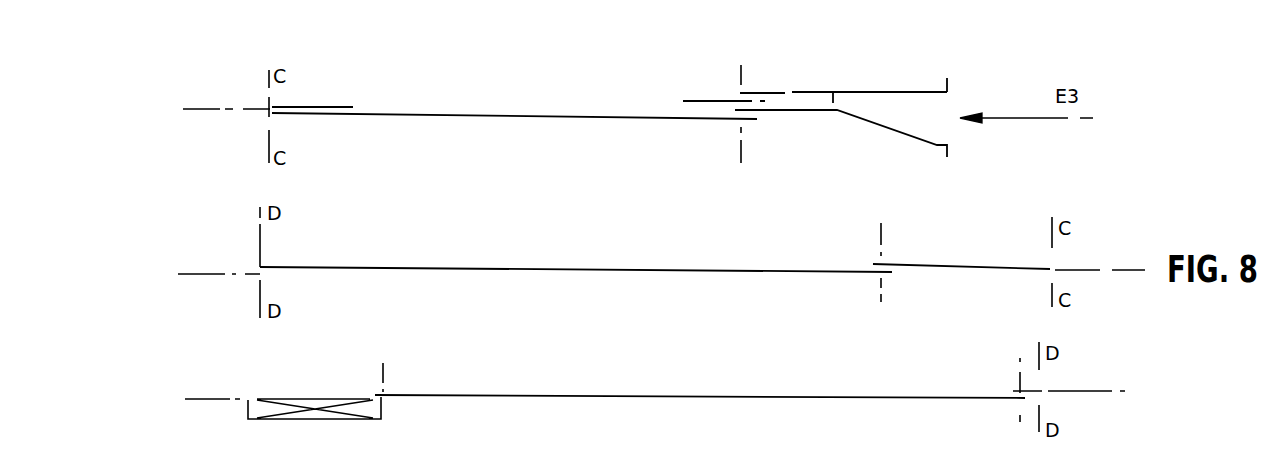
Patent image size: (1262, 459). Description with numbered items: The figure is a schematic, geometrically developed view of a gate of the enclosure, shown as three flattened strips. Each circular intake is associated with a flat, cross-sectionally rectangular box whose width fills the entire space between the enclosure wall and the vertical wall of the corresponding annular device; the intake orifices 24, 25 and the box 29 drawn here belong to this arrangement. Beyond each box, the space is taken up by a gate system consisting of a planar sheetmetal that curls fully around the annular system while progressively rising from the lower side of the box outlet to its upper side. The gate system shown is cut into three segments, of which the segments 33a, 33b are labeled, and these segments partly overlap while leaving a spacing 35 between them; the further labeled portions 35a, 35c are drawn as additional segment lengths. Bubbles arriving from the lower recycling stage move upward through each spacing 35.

The first segment of gate system 33a is at (492, 117).
The second segment of gate system 33b is at (508, 267).
The first rail segment 35a is at (948, 265).
The third rail segment 35c is at (593, 395).
The spacing 35 is at (760, 117).
The intake orifice 24 is at (815, 82).
The intake orifice 25 is at (952, 105).
The box 29 is at (257, 407).